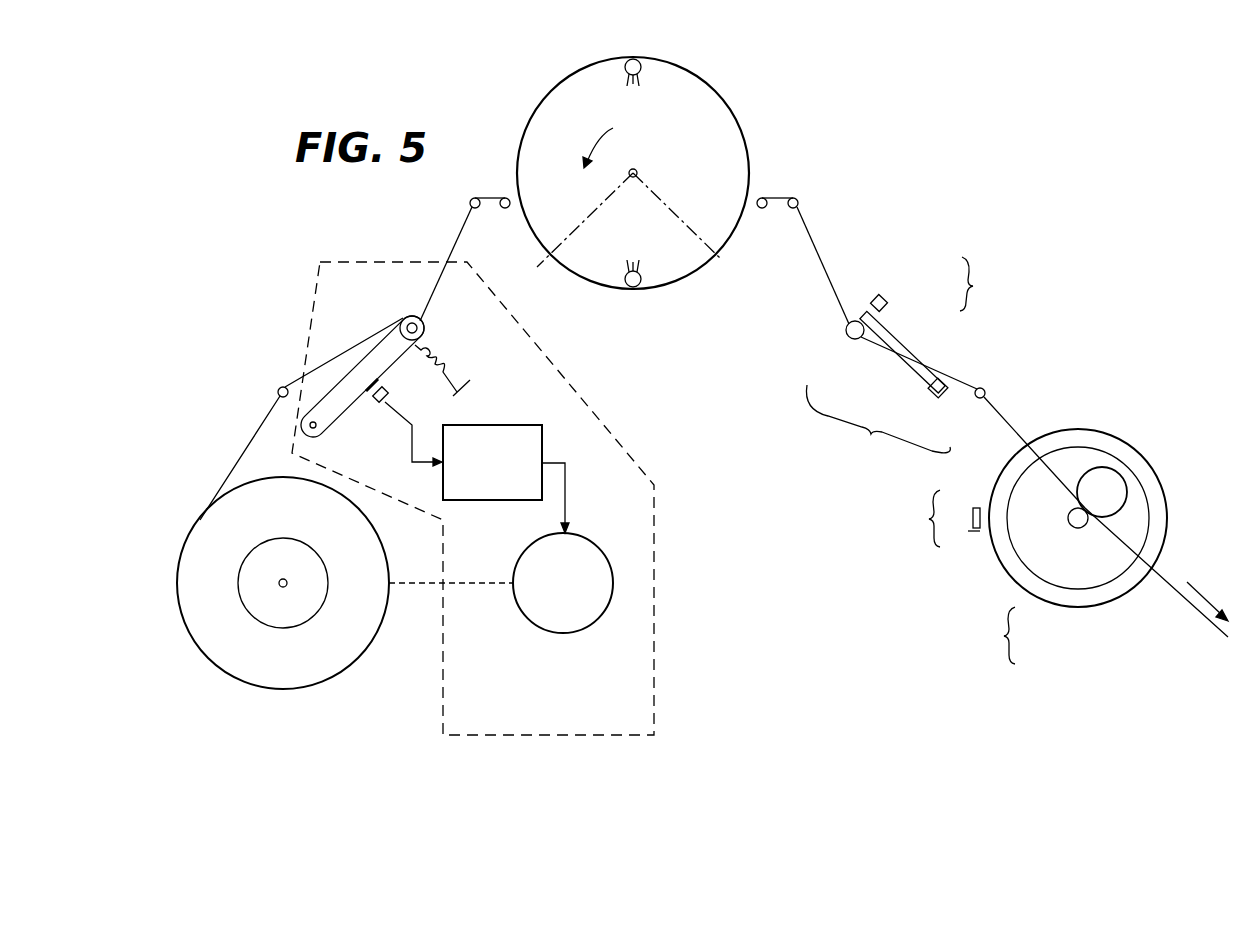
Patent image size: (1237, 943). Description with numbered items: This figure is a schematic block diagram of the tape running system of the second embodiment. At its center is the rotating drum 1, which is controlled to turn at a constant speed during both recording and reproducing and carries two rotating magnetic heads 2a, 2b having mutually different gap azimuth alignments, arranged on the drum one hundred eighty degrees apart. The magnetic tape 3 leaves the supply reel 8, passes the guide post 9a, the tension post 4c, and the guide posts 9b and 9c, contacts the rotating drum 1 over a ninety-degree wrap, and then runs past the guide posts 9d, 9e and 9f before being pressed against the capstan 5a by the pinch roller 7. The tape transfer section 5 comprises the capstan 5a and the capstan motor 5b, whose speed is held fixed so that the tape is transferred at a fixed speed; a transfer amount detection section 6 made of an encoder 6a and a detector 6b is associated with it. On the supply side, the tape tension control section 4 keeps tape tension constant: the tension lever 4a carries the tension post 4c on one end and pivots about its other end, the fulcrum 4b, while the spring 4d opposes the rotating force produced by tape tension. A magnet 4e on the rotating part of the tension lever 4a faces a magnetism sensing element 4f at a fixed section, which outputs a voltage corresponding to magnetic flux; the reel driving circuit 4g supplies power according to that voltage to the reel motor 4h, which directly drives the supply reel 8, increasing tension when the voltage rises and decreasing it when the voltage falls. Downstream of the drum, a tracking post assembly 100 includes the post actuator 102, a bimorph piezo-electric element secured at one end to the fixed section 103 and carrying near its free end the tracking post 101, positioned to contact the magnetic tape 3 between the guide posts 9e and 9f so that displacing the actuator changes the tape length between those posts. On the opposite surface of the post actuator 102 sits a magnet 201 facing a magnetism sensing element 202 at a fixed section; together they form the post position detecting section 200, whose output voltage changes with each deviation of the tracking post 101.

The rotating drum 1 is at (727, 110).
The head 2a is at (641, 63).
The head 2b is at (635, 287).
The magnetic tape 3 is at (1192, 608).
The tape tension control section 4 is at (654, 567).
The tension lever 4a is at (385, 338).
The fulcrum 4b is at (316, 428).
The tension post 4c is at (412, 316).
The spring 4d is at (443, 352).
The magnet 4e is at (386, 392).
The magnetism sensing element 4f is at (380, 404).
The reel driving circuit 4g is at (522, 426).
The reel motor 4h is at (604, 564).
The tape transfer section 5 is at (1005, 635).
The capstan 5a is at (1075, 527).
The capstan motor 5b is at (1043, 570).
The transfer amount detection section 6 is at (930, 518).
The encoder 6a is at (991, 537).
The detector 6b is at (975, 512).
The pinch roller 7 is at (1122, 478).
The supply reel 8 is at (318, 562).
The guide post 9a is at (283, 398).
The guide post 9b is at (475, 208).
The guide post 9c is at (505, 208).
The guide post 9d is at (762, 208).
The guide post 9e is at (793, 208).
The guide post 9f is at (985, 388).
The tracking post assembly 100 is at (878, 425).
The tracking post 101 is at (853, 340).
The post actuator 102 is at (913, 373).
The fixed section 103 is at (940, 397).
The post position detecting section 200 is at (989, 284).
The magnet 201 is at (877, 322).
The magnetism sensing element 202 is at (885, 300).